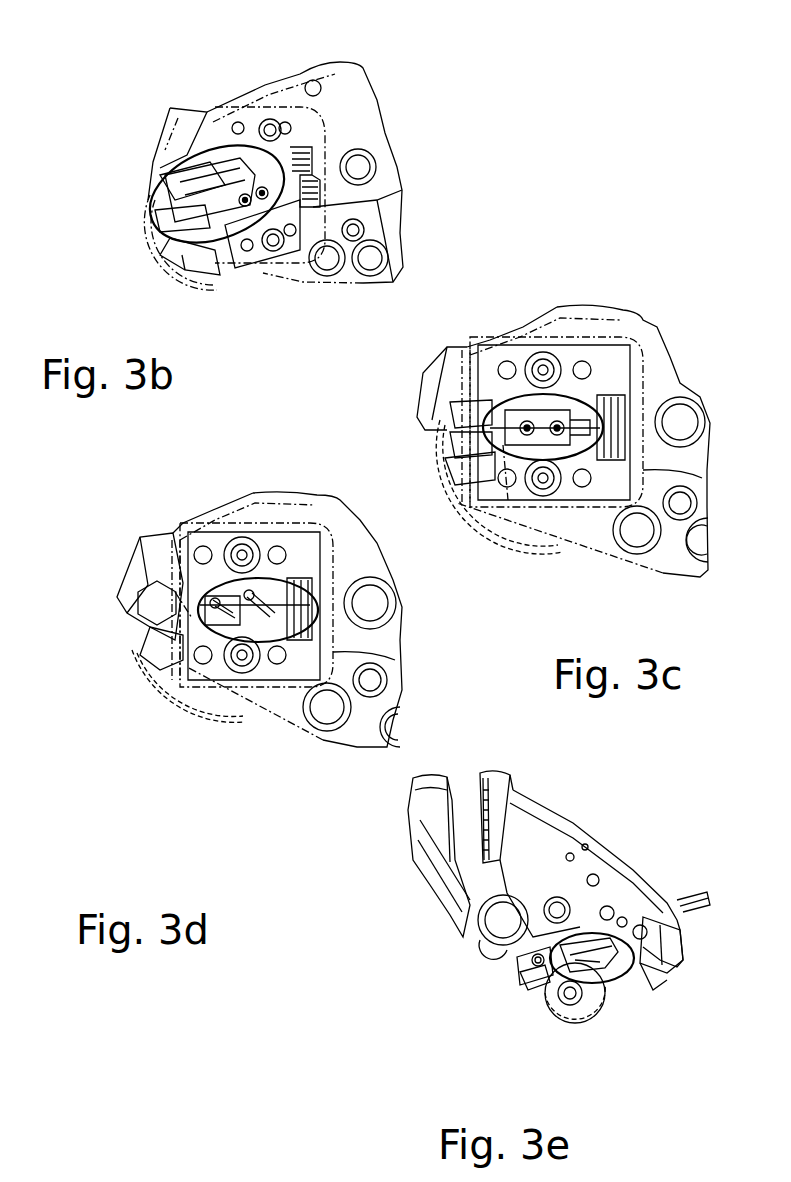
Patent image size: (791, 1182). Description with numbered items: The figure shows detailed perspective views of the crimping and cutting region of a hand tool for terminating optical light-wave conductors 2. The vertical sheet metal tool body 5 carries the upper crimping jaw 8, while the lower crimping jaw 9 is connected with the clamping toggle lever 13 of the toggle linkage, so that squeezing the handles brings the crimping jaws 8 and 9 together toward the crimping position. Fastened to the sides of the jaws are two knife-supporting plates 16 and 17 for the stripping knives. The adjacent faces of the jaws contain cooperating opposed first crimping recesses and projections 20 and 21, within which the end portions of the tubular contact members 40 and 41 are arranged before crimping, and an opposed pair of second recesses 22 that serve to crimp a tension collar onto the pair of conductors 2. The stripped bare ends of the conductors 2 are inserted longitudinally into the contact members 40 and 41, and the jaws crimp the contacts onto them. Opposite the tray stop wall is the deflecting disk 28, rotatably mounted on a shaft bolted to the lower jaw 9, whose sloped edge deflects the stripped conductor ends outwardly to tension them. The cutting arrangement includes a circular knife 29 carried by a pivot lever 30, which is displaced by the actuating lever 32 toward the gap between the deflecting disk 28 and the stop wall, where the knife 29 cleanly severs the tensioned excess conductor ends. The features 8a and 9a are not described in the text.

In FIG. 3D, the light-wave conductor 2 is at (233, 608).
In FIG. 3E, the light-wave conductor 2 is at (690, 888).
In FIG. 3B, the tool body 5 is at (362, 122).
In FIG. 3E, the tool body 5 is at (545, 845).
In FIG. 3B, the upper crimping jaw 8 is at (170, 150).
In FIG. 3C, the upper crimping jaw 8 is at (448, 390).
In FIG. 3D, the upper crimping jaw 8 is at (128, 567).
In FIG. 3E, the upper crimping jaw 8 is at (672, 950).
In FIG. 3C, the bracket guide 8a is at (512, 410).
In FIG. 3D, the bracket guide 8a is at (175, 580).
In FIG. 3B, the lower crimping jaw 9 is at (185, 250).
In FIG. 3C, the lower crimping jaw 9 is at (452, 460).
In FIG. 3D, the lower crimping jaw 9 is at (145, 633).
In FIG. 3E, the lower crimping jaw 9 is at (645, 978).
In FIG. 3C, the lever guide 9a is at (508, 440).
In FIG. 3D, the lever guide 9a is at (190, 620).
In FIG. 3B, the clamping toggle lever 13 is at (346, 272).
In FIG. 3C, the clamping toggle lever 13 is at (655, 560).
In FIG. 3D, the clamping toggle lever 13 is at (280, 712).
In FIG. 3B, the knife-supporting plate 16 is at (285, 115).
In FIG. 3C, the knife-supporting plate 16 is at (563, 340).
In FIG. 3D, the knife-supporting plate 16 is at (270, 530).
In FIG. 3B, the knife-supporting plate 17 is at (262, 255).
In FIG. 3C, the knife-supporting plate 17 is at (568, 498).
In FIG. 3D, the knife-supporting plate 17 is at (222, 675).
In FIG. 3B, the first crimping recesses and projections 20 is at (237, 185).
In FIG. 3B, the first crimping recesses and projections 21 is at (272, 165).
In FIG. 3B, the second recesses 22 is at (203, 160).
In FIG. 3C, the second recesses 22 is at (460, 412).
In FIG. 3B, the deflecting disk 28 is at (148, 265).
In FIG. 3C, the deflecting disk 28 is at (478, 522).
In FIG. 3D, the deflecting disk 28 is at (178, 703).
In FIG. 3E, the deflecting disk 28 is at (552, 1002).
In FIG. 3E, the circular knife 29 is at (540, 952).
In FIG. 3E, the pivot lever 30 is at (520, 972).
In FIG. 3E, the actuating lever 32 is at (505, 925).
In FIG. 3B, the tubular contact member 40 is at (232, 208).
In FIG. 3C, the tubular contact member 40 is at (530, 425).
In FIG. 3B, the tubular contact member 41 is at (252, 190).
In FIG. 3C, the tubular contact member 41 is at (560, 425).